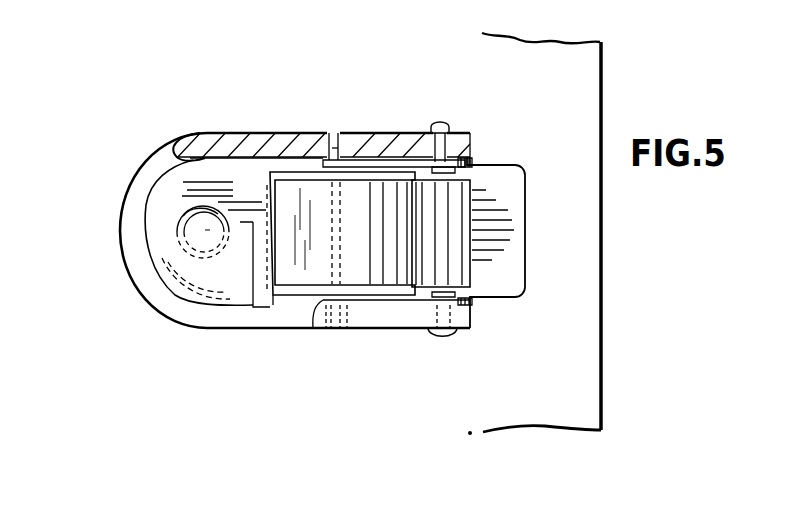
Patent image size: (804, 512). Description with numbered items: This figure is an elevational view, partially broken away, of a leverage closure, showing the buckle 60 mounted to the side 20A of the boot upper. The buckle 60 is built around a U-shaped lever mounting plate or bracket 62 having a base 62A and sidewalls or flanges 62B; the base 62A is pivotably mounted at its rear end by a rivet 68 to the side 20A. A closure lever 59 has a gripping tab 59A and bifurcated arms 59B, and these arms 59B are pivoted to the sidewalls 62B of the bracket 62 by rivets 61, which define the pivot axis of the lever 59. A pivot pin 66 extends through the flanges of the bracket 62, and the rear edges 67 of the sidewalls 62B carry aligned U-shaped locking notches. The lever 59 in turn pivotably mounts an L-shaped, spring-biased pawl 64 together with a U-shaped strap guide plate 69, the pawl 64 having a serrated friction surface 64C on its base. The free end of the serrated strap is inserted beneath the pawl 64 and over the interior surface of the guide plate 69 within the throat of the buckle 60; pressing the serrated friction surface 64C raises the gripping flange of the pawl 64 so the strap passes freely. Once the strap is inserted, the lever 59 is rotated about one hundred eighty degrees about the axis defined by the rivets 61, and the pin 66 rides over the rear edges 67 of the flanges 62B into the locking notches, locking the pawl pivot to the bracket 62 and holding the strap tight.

The side of the boot upper 20A is at (580, 398).
The closure lever 59 is at (222, 335).
The gripping tab 59A is at (135, 244).
The bifurcated arms 59B is at (386, 133).
The buckle 60 is at (484, 113).
The rivets 61 is at (445, 125).
The lever mounting plate or bracket 62 is at (522, 167).
The base 62A is at (503, 218).
The sidewalls or flanges 62B is at (477, 160).
The pawl 64 is at (322, 258).
The serrated friction surface 64C is at (405, 245).
The pivot pin 66 is at (335, 150).
The rear edges 67 is at (312, 152).
The rivet 68 is at (182, 236).
The strap guide plate 69 is at (262, 196).